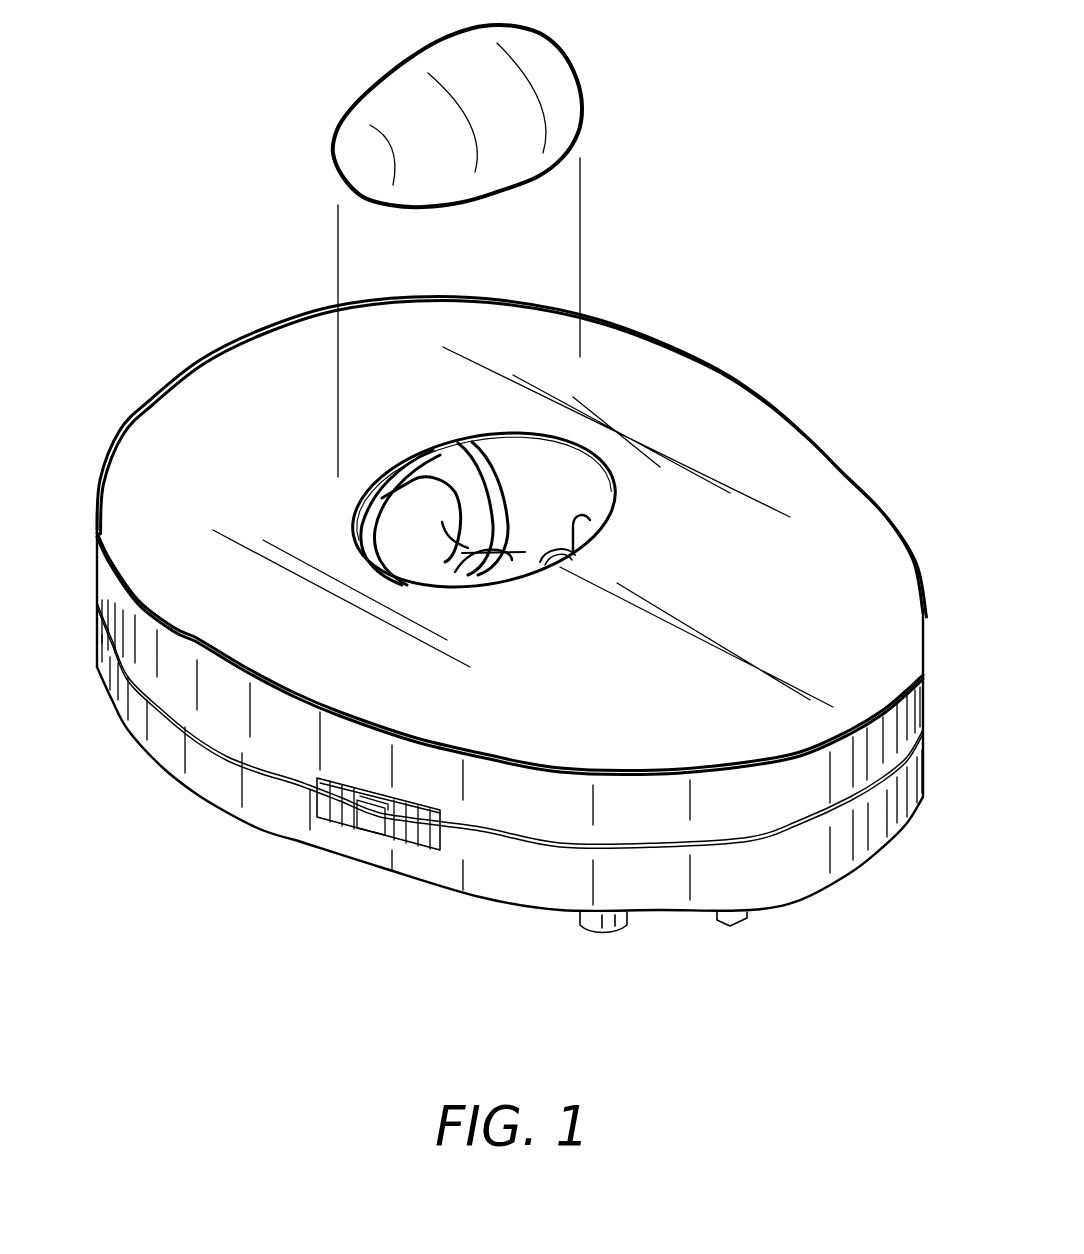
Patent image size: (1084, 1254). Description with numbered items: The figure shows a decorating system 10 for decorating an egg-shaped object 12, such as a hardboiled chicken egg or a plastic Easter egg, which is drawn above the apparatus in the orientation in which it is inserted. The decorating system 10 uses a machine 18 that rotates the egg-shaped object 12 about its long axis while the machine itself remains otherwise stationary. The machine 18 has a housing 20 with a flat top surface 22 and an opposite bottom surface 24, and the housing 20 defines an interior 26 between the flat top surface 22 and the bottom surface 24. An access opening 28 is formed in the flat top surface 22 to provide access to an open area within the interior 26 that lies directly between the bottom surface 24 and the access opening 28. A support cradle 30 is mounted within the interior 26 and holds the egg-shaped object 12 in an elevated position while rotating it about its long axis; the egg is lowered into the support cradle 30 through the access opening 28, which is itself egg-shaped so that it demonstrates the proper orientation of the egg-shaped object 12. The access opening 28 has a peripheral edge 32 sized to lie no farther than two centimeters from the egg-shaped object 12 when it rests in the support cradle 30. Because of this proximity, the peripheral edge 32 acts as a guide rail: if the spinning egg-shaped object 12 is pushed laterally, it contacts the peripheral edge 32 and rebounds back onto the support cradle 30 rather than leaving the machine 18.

The decorating system 10 is at (777, 200).
The egg-shaped object 12 is at (375, 87).
The machine 18 is at (915, 560).
The housing 20 is at (102, 477).
The flat top surface 22 is at (794, 461).
The bottom surface 24 is at (773, 908).
The interior 26 is at (558, 467).
The access opening 28 is at (603, 462).
The support cradle 30 is at (462, 545).
The peripheral edge 32 is at (590, 518).